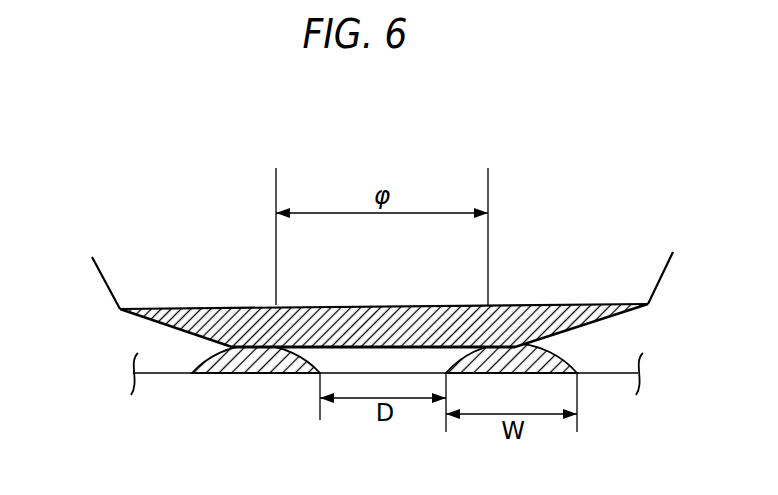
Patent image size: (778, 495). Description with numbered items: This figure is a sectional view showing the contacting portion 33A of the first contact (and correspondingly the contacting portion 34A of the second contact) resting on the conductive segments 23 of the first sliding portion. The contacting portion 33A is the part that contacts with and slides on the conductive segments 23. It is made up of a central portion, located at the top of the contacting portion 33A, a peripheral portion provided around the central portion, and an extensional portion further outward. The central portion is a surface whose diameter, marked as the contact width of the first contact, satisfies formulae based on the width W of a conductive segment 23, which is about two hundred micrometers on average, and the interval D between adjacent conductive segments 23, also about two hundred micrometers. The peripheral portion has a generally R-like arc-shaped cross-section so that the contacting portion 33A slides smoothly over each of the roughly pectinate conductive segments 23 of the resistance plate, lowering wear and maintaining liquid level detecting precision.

The contacting portion 33A is at (352, 237).
The contacting portion 34A is at (382, 293).
The conductive segment 23 is at (252, 376).